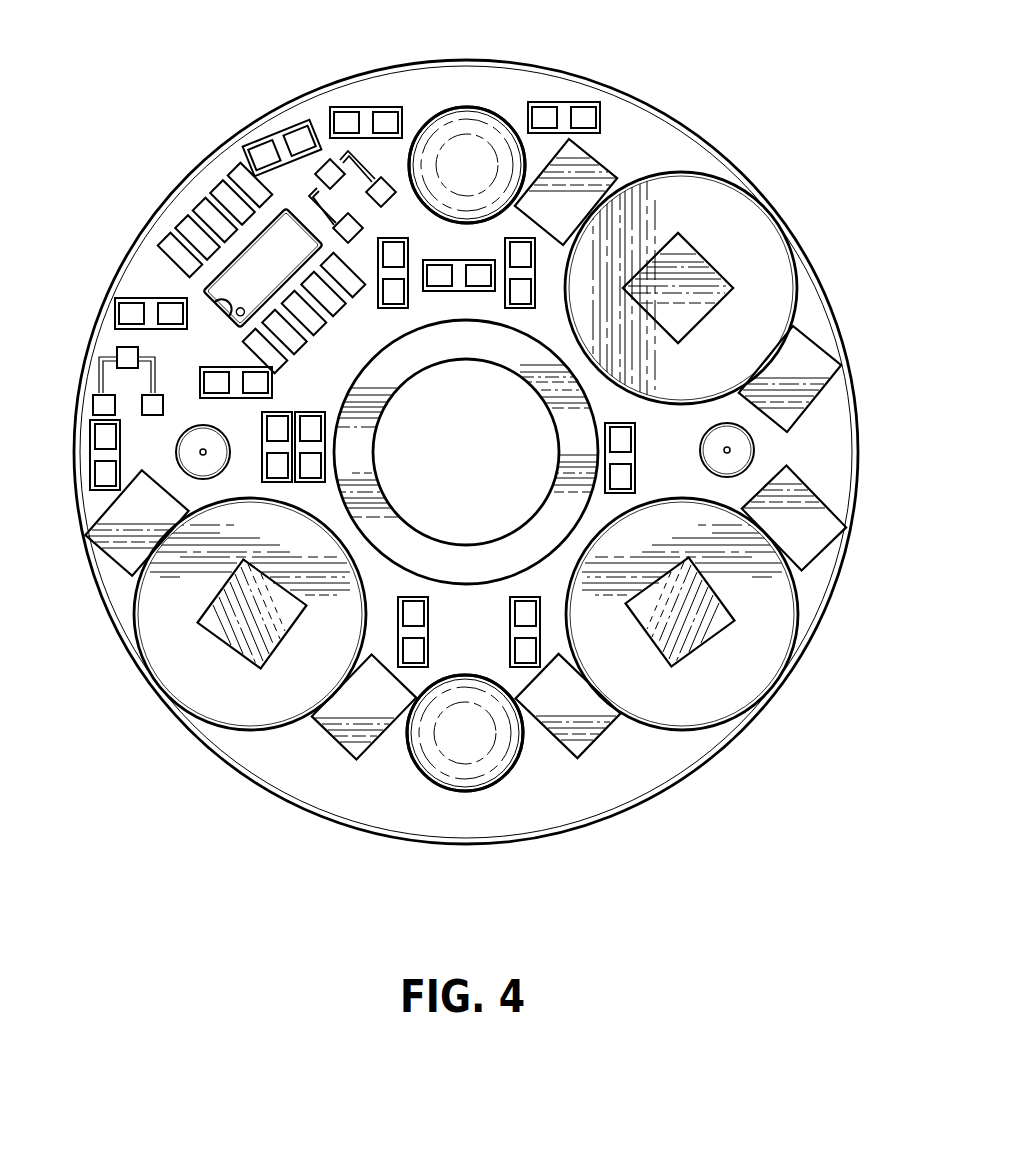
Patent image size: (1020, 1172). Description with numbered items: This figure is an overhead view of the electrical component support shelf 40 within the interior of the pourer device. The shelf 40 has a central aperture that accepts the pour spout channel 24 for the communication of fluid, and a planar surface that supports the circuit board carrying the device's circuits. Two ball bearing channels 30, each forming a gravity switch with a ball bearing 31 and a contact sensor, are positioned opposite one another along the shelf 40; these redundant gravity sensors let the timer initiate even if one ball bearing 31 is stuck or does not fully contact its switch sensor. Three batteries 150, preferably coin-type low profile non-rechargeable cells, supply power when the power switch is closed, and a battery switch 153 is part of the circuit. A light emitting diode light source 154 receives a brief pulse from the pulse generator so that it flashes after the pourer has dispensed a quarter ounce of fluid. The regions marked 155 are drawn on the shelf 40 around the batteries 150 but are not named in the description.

The pour spout channel 24 is at (478, 463).
The ball bearing channel 30 is at (490, 133).
The ball bearing 31 is at (467, 107).
The electrical component support shelf 40 is at (372, 807).
The battery 150 is at (702, 256).
The battery switch 153 is at (97, 357).
The light emitting diode (LED) light source 154 is at (330, 162).
The LED mounting region 155 is at (770, 268).